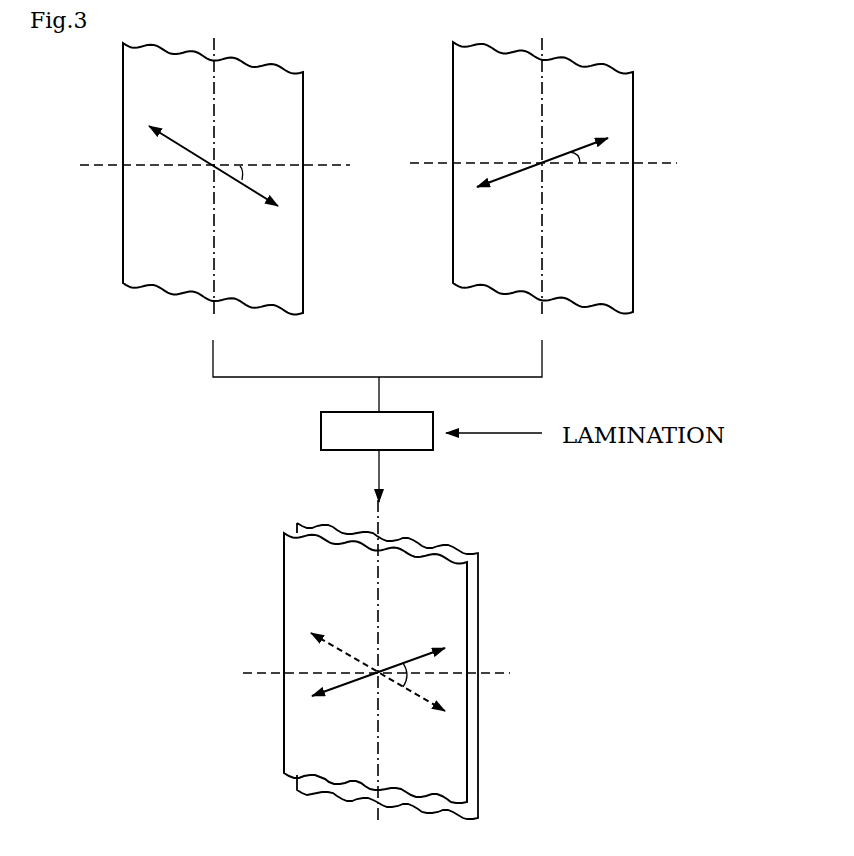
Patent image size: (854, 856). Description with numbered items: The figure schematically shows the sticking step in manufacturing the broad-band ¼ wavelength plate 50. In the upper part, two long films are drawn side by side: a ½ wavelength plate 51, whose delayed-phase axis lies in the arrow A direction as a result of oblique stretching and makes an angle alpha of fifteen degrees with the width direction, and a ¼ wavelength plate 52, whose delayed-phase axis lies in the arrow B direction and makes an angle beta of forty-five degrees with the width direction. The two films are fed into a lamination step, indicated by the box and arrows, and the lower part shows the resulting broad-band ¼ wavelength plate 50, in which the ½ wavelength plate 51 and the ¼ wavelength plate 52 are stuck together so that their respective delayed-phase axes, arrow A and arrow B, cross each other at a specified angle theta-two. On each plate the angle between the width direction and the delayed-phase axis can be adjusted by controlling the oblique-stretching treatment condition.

The broad-band ¼ wavelength plate 50 is at (498, 563).
The ½ wavelength plate 51 is at (633, 130).
The ¼ wavelength plate 52 is at (122, 132).